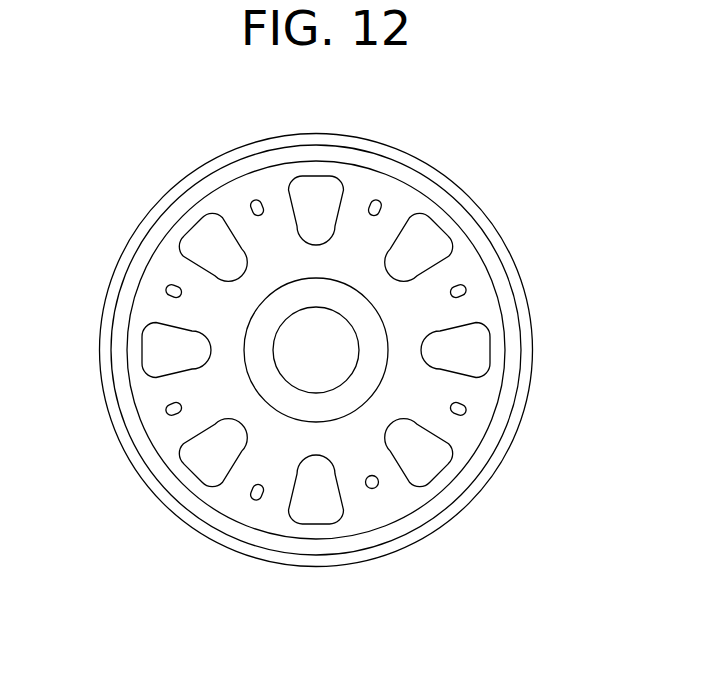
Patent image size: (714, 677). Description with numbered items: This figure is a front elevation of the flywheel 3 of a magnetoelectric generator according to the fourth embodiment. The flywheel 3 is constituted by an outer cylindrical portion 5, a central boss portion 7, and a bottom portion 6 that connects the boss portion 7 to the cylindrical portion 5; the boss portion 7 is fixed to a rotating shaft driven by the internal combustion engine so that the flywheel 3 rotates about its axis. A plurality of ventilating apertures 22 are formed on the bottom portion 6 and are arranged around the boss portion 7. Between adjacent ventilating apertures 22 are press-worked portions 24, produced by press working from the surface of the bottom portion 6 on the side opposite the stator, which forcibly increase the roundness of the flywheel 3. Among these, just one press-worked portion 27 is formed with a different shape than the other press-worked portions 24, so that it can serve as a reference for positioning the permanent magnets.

The flywheel 3 is at (500, 235).
The cylindrical portion 5 is at (188, 172).
The bottom portion 6 is at (225, 198).
The boss portion 7 is at (265, 318).
The ventilating apertures 22 is at (206, 226).
The press-worked portions 24 is at (462, 292).
The press-worked portion 27 is at (379, 483).